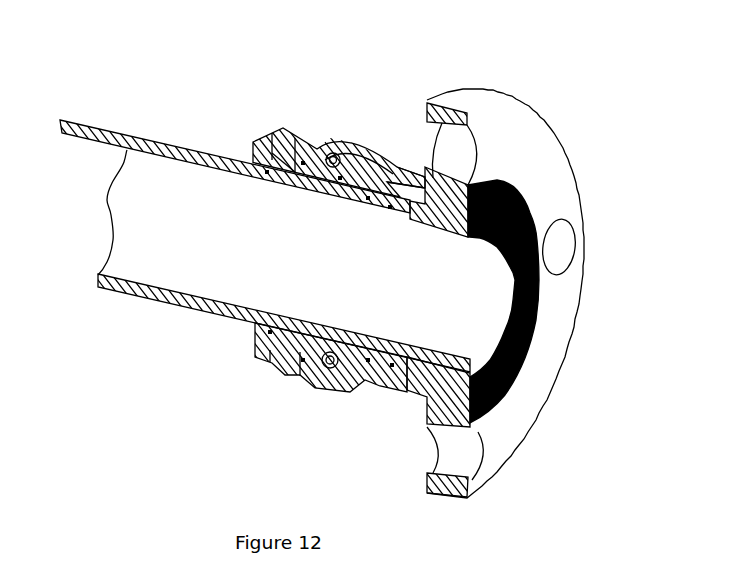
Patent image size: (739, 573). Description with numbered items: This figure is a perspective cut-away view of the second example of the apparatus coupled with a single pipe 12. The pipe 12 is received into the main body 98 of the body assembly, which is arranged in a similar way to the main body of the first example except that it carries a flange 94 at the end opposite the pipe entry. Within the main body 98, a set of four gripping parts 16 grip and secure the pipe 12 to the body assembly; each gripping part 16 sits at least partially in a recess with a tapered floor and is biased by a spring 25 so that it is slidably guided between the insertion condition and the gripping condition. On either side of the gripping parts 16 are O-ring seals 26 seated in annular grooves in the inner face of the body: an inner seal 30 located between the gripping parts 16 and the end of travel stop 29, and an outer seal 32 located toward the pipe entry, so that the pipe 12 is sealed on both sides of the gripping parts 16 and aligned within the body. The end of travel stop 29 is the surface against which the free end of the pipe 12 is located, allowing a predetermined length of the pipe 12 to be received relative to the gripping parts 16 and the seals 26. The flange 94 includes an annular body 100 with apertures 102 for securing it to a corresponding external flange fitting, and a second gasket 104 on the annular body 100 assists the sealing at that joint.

The pipe 12 is at (103, 285).
The outer seal 32 is at (243, 178).
The flange 94 is at (275, 130).
The gripping part 16 is at (290, 140).
The spring 25 is at (327, 140).
The main body 98 is at (392, 150).
The seal 26 is at (268, 334).
The inner seal 30 is at (368, 200).
The end of travel stop 29 is at (413, 222).
The annular body 100 is at (538, 117).
The second gasket 104 is at (513, 377).
The aperture 102 is at (573, 245).